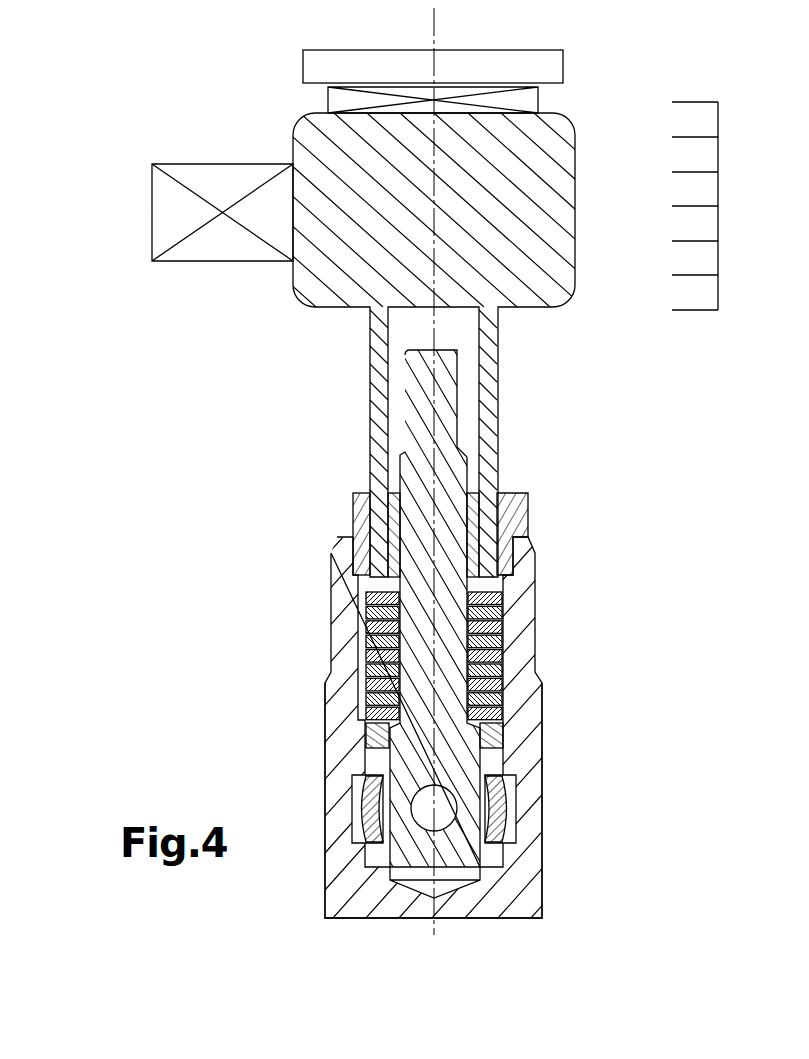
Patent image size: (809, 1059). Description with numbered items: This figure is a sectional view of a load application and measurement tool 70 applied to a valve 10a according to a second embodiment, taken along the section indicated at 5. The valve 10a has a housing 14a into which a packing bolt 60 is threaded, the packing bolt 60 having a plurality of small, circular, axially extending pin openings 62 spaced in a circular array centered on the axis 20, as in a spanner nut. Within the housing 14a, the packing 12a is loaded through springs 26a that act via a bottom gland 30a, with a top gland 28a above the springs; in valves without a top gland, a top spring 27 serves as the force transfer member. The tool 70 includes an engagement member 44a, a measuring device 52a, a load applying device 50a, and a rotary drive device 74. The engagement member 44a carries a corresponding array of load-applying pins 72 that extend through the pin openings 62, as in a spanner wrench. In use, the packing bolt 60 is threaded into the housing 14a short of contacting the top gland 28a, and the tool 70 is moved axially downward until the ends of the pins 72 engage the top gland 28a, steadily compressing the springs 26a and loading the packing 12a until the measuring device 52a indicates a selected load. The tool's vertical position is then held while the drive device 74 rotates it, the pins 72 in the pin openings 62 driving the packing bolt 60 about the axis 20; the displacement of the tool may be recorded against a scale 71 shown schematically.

The section line 5- 5 is at (663, 472).
The valve 10a is at (214, 732).
The packing 12a is at (506, 760).
The housing 14a is at (340, 900).
The axis 20 is at (437, 24).
The springs 26a is at (512, 649).
The top spring 27 is at (367, 626).
The top gland 28a is at (507, 591).
The bottom gland 30a is at (505, 737).
The engagement member 44a is at (504, 401).
The load applying device 50a is at (543, 63).
The measuring device 52a is at (528, 98).
The packing bolt 60 is at (511, 491).
The pin openings 62 is at (372, 520).
The load application and measurement tool 70 is at (543, 153).
The scale 71 is at (718, 190).
The load-applying pins 72 is at (498, 368).
The rotary drive device 74 is at (205, 182).